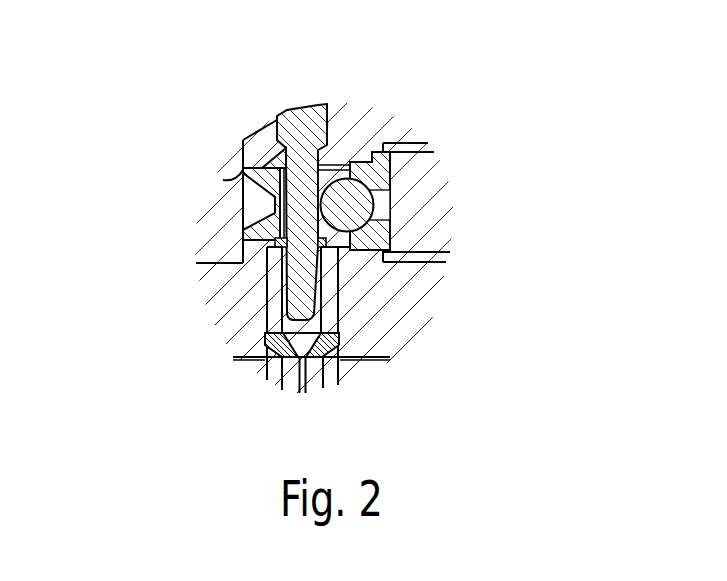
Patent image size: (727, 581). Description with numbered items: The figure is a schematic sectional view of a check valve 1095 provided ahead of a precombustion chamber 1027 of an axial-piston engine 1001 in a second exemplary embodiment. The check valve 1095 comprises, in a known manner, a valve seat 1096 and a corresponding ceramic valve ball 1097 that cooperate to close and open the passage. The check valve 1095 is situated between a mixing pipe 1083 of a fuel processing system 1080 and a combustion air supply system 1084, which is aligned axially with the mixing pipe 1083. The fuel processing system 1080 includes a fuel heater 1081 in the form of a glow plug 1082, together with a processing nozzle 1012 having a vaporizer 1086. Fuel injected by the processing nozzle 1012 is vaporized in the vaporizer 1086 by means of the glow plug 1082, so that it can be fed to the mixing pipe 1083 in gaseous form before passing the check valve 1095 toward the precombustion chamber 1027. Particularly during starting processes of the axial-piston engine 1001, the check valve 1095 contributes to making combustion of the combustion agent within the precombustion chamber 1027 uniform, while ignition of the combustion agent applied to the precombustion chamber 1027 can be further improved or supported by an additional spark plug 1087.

The axial-piston engine 1001 is at (395, 296).
The processing nozzle 1012 is at (300, 405).
The precombustion chamber 1027 is at (223, 228).
The fuel processing system 1080 is at (180, 296).
The fuel heater 1081 is at (298, 130).
The glow plug 1082 is at (307, 303).
The mixing pipe 1083 is at (323, 157).
The combustion air supply system 1084 is at (418, 210).
The vaporizer 1086 is at (255, 332).
The spark plug 1087 is at (216, 174).
The check valve 1095 is at (372, 133).
The valve seat 1096 is at (387, 163).
The ceramic valve ball 1097 is at (418, 150).